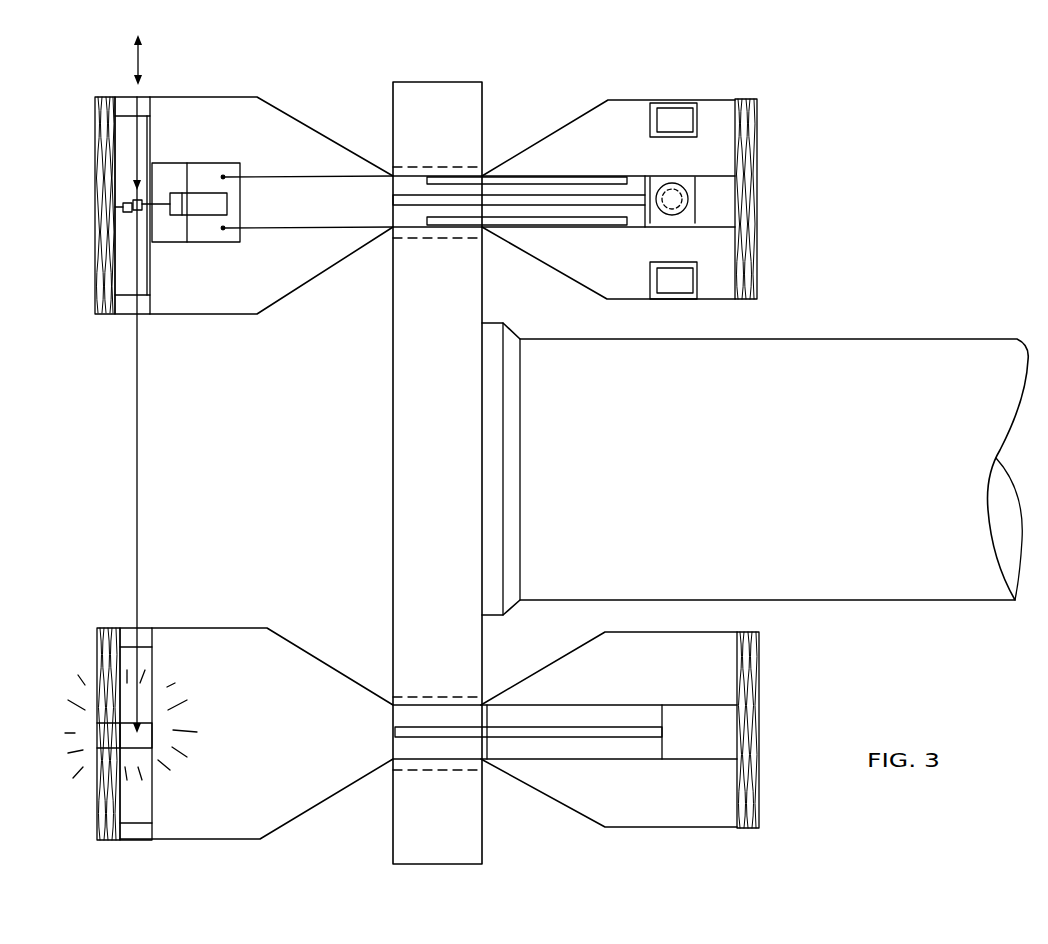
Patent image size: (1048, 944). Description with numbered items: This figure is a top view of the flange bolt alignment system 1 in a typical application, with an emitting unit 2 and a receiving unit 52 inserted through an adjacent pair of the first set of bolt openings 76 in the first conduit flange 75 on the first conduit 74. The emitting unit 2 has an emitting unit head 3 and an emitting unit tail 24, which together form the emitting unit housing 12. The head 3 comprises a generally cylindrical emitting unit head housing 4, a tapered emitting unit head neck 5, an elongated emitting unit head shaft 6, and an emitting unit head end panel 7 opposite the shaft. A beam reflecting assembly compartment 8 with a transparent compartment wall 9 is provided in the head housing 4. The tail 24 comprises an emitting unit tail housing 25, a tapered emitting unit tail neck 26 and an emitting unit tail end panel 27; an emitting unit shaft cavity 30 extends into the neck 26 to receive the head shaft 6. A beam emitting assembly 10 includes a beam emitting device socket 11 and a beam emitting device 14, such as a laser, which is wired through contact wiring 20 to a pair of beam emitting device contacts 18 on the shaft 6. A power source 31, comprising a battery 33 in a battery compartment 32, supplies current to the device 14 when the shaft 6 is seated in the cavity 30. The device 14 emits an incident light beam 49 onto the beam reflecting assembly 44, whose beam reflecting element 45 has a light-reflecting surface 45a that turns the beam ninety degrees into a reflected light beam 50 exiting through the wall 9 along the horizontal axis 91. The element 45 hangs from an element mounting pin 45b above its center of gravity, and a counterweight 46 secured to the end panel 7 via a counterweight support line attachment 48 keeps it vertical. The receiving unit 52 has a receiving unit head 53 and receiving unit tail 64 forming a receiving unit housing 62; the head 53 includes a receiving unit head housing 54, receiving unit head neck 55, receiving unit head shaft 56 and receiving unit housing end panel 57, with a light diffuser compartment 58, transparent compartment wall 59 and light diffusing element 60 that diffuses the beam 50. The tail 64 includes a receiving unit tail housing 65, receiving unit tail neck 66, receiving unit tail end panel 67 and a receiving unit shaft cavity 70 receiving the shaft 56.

The flange bolt alignment system 1 is at (55, 85).
The emitting unit 2 is at (243, 73).
The emitting unit head 3 is at (233, 320).
The emitting unit head housing 4 is at (187, 93).
The emitting unit head neck 5 is at (352, 252).
The emitting unit head shaft 6 is at (407, 174).
The emitting unit head end panel 7 is at (88, 105).
The beam reflecting assembly compartment 8 is at (148, 122).
The transparent compartment wall 9 is at (125, 97).
The beam emitting assembly 10 is at (230, 150).
The beam emitting device socket 11 is at (210, 242).
The emitting unit housing 12 is at (320, 90).
The beam emitting device 14 is at (228, 204).
The beam emitting device contacts 18 is at (587, 227).
The contact wiring 20 is at (322, 226).
The emitting unit tail 24 is at (718, 92).
The emitting unit tail housing 25 is at (630, 99).
The emitting unit tail neck 26 is at (562, 120).
The emitting unit tail end panel 27 is at (758, 118).
The emitting unit shaft cavity 30 is at (543, 180).
The power source 31 is at (713, 283).
The battery compartment 32 is at (698, 125).
The battery 33 is at (668, 178).
The beam reflecting assembly 44 is at (125, 160).
The beam reflecting element 45 is at (137, 185).
The light-reflecting surface 45a is at (141, 208).
The element mounting pin 45b is at (143, 205).
The counterweight 46 is at (130, 195).
The counterweight support line attachment 48 is at (122, 213).
The incident light beam 49 is at (153, 205).
The reflected light beam 50 is at (148, 458).
The receiving unit 52 is at (302, 612).
The receiving unit head 53 is at (198, 615).
The receiving unit head housing 54 is at (247, 628).
The receiving unit head neck 55 is at (300, 645).
The receiving unit head shaft 56 is at (408, 697).
The receiving unit housing end panel 57 is at (93, 628).
The light diffuser compartment 58 is at (152, 655).
The transparent compartment wall 59 is at (150, 637).
The light diffusing element 60 is at (150, 747).
The receiving unit housing 62 is at (585, 620).
The receiving unit tail 64 is at (722, 627).
The receiving unit tail housing 65 is at (673, 632).
The receiving unit tail neck 66 is at (557, 665).
The receiving unit tail end panel 67 is at (760, 655).
The receiving unit shaft cavity 70 is at (637, 707).
The first conduit 74 is at (787, 353).
The first conduit flange 75 is at (452, 82).
The first set of bolt openings 76 is at (452, 168).
The horizontal axis 91 is at (143, 60).